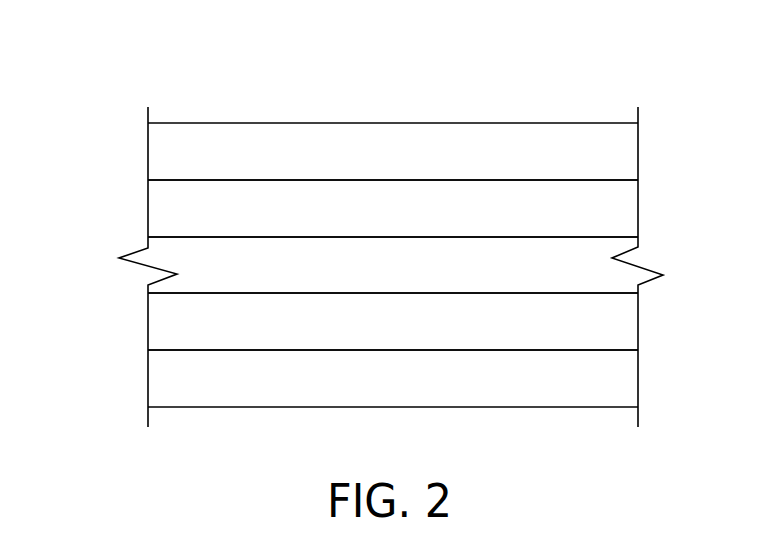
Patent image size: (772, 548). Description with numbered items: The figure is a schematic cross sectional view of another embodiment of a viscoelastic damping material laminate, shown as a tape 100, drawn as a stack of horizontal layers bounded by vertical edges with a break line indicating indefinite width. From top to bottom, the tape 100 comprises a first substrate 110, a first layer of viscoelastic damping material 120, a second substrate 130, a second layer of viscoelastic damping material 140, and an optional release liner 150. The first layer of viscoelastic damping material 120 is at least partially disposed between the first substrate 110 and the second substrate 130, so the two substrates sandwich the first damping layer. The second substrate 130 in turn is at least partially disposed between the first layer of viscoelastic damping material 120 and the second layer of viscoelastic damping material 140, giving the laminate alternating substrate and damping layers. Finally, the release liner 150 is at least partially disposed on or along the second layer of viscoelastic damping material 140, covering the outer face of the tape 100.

The tape 100 is at (70, 88).
The first substrate 110 is at (627, 153).
The first layer of viscoelastic damping material 120 is at (620, 213).
The second substrate 130 is at (615, 277).
The second layer of viscoelastic damping material 140 is at (617, 318).
The release liner 150 is at (617, 378).